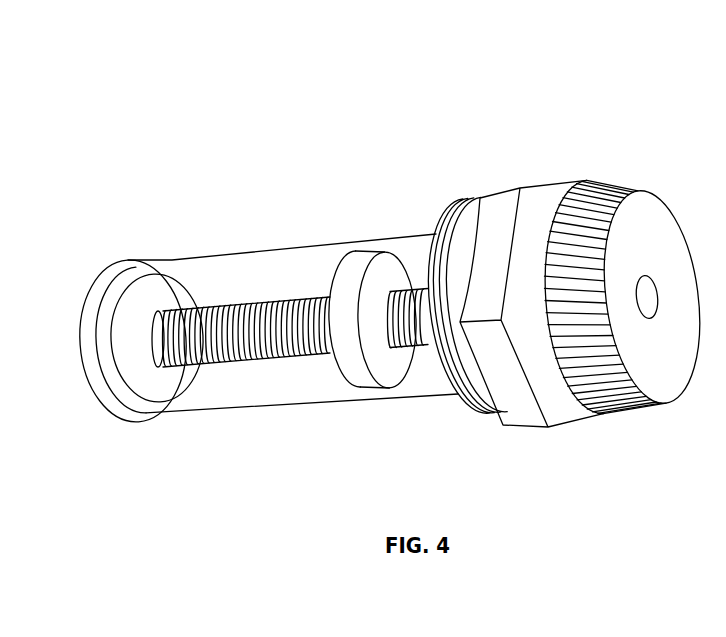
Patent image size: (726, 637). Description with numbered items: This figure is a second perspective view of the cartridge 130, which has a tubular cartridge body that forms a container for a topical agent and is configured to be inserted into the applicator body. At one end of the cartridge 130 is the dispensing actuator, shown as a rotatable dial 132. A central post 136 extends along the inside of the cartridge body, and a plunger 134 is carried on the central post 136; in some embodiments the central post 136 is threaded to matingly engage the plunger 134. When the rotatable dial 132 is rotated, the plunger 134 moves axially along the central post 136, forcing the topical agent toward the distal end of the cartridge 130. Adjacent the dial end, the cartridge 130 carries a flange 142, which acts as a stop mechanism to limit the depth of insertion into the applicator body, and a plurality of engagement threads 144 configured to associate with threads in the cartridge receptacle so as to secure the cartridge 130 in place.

The cartridge 130 is at (426, 39).
The rotatable dial 132 is at (605, 192).
The plunger 134 is at (378, 388).
The central post 136 is at (214, 310).
The flange 142 is at (500, 193).
The engagement threads 144 is at (478, 413).